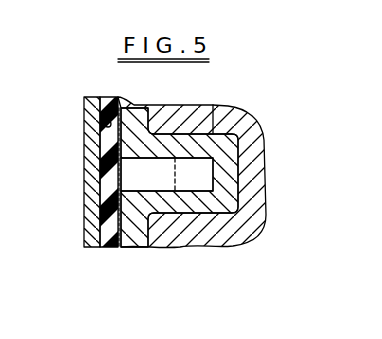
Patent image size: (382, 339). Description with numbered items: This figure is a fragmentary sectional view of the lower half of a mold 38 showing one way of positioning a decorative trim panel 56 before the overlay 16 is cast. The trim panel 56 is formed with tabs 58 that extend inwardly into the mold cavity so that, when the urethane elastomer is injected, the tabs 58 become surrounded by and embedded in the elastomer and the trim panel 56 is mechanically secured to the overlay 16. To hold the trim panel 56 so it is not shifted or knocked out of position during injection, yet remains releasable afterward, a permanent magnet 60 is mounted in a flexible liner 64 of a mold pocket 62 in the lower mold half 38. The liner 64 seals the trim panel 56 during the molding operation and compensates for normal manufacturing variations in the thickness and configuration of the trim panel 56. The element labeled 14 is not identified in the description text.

The wall 14 is at (84, 218).
The overlay 16 is at (107, 252).
The mold 38 is at (217, 237).
The trim panel 56 is at (112, 172).
The tabs 58 is at (105, 125).
The permanent magnet 60 is at (192, 181).
The mold pocket 62 is at (214, 105).
The flexible liner 64 is at (133, 232).